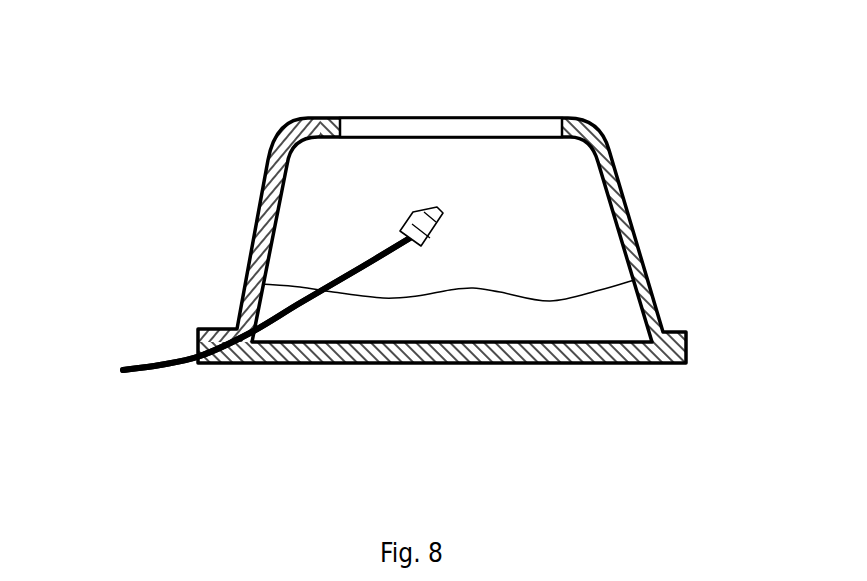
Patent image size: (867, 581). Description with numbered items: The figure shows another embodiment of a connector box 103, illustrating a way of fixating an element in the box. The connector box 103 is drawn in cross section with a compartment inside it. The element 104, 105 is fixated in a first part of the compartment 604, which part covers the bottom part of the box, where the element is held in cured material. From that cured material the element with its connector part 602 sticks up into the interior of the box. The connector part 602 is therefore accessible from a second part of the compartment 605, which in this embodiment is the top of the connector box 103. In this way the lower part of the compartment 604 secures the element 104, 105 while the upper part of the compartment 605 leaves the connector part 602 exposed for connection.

The connector box 103 is at (270, 145).
The connector part 602 is at (439, 209).
The second part of the compartment 605 is at (550, 217).
The first part of the compartment 604 is at (617, 317).
The element 104 is at (297, 313).
The element 105 is at (297, 313).